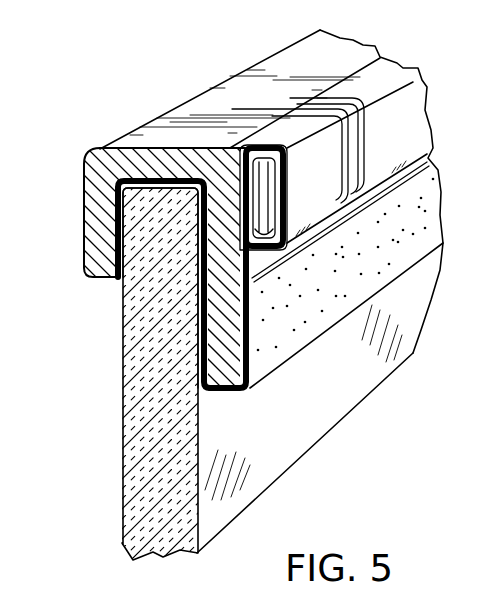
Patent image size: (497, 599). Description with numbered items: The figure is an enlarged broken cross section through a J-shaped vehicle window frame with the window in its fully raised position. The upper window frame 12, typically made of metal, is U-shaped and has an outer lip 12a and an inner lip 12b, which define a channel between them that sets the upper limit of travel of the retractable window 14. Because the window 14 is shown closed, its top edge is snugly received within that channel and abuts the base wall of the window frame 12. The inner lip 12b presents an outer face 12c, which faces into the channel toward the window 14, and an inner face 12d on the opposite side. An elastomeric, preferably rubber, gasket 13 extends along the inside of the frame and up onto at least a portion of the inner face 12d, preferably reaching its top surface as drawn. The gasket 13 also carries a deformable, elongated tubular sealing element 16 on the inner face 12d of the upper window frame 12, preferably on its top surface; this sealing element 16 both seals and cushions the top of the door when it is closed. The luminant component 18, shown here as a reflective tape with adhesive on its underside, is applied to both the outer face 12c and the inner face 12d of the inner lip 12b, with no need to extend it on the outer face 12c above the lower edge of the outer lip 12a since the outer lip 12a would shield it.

The upper window frame 12 is at (244, 270).
The outer lip 12a is at (95, 213).
The inner lip 12b is at (220, 357).
The outer face 12c is at (197, 307).
The inner face 12d is at (243, 347).
The gasket 13 is at (167, 180).
The retractable window 14 is at (294, 417).
The tubular sealing element 16 is at (402, 108).
The luminant component 18 is at (404, 196).